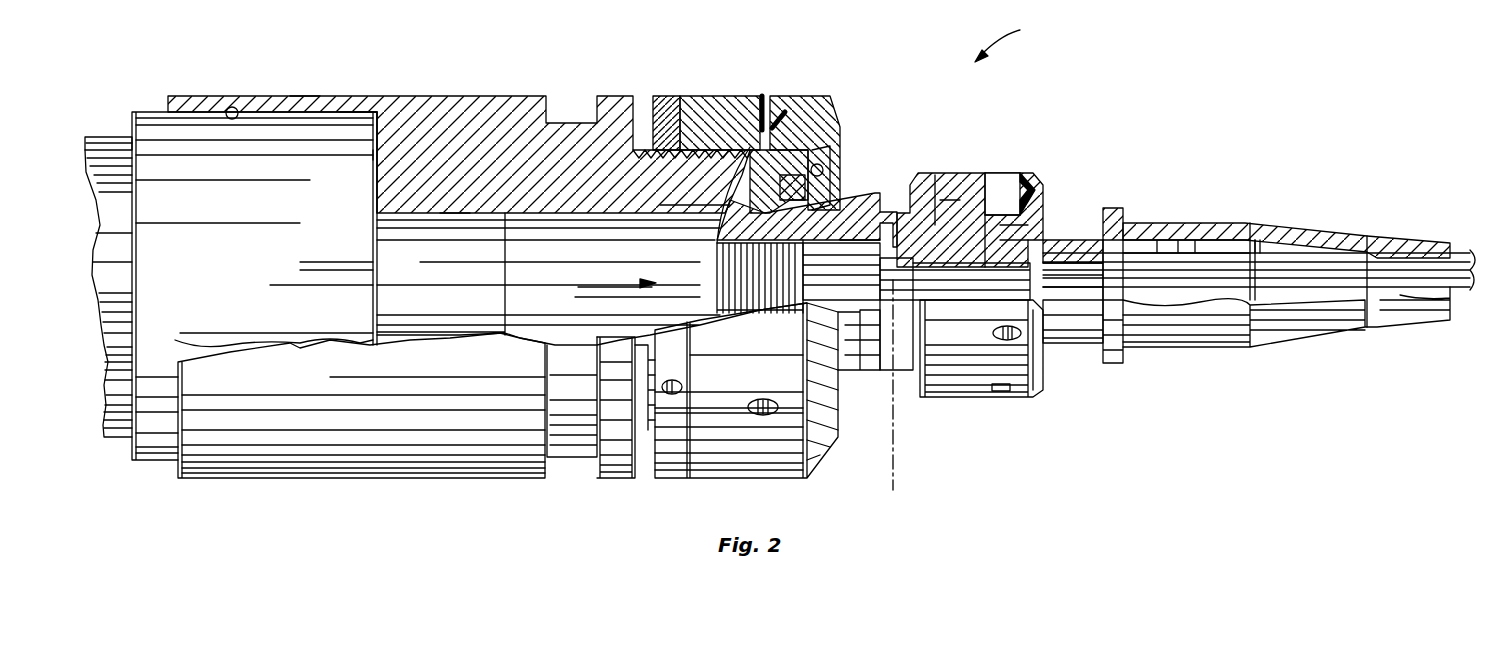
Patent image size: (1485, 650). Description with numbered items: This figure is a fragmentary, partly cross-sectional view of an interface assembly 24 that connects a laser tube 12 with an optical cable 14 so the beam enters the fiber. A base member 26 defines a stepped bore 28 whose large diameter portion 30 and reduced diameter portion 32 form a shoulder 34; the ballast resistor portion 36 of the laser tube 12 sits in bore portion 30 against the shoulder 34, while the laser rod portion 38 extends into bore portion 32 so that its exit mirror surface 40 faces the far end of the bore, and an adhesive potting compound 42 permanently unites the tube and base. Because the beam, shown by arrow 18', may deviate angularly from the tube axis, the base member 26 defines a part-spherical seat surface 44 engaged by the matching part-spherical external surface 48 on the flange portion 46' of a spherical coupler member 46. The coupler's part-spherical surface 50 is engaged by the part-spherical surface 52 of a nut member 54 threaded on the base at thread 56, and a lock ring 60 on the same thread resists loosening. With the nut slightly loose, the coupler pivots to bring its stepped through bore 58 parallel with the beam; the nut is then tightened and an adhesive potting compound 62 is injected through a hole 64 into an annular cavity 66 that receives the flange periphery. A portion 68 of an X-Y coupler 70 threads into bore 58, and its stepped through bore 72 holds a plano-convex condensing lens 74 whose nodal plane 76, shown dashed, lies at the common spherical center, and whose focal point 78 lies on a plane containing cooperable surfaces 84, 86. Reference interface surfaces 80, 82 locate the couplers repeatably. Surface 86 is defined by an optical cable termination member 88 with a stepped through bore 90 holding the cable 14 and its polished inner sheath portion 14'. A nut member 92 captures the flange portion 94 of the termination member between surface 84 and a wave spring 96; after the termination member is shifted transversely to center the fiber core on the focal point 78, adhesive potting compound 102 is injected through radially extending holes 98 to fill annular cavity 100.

The laser tube 12 is at (113, 137).
The optical cable 14 is at (1259, 250).
The inner sheath portion 14' is at (981, 348).
The laser beam 18' is at (617, 297).
The interface assembly 24 is at (1015, 34).
The base member 26 is at (518, 96).
The stepped bore 28 is at (336, 110).
The large diameter portion 30 is at (232, 107).
The reduced diameter portion 32 is at (455, 215).
The shoulder 34 is at (375, 155).
The ballast resistor portion 36 is at (258, 282).
The laser rod portion 38 is at (375, 266).
The exit mirror surface 40 is at (505, 297).
The adhesive potting compound 42 is at (296, 96).
The part-spherical seat surface 44 is at (735, 200).
The spherical coupler member 46 is at (859, 366).
The flange portion 46' is at (870, 161).
The part-spherical external surface 48 is at (740, 168).
The part-spherical surface 50 is at (775, 222).
The part-spherical surface 52 is at (780, 180).
The nut member 54 is at (812, 100).
The thread 56 is at (720, 148).
The through bore 58 is at (712, 255).
The lock ring 60 is at (672, 108).
The adhesive potting compound 62 is at (820, 148).
The hole 64 is at (770, 105).
The annular cavity 66 is at (832, 175).
The portion 68 is at (820, 270).
The X-Y coupler 70 is at (925, 175).
The stepped through bore 72 is at (800, 330).
The plano-convex condensing lens 74 is at (882, 272).
The nodal plane 76 is at (900, 432).
The focal point 78 is at (985, 282).
The reference interface surface 80 is at (905, 195).
The reference interface surface 82 is at (912, 240).
The surface 84 is at (1006, 250).
The surface 86 is at (985, 245).
The optical cable termination member 88 is at (1085, 345).
The stepped through bore 90 is at (1035, 290).
The nut member 92 is at (1038, 395).
The flange portion 94 is at (1042, 222).
The wave spring 96 is at (1045, 240).
The radially extending holes 98 is at (992, 392).
The annular cavity 100 is at (1000, 178).
The adhesive potting compound 102 is at (1040, 175).